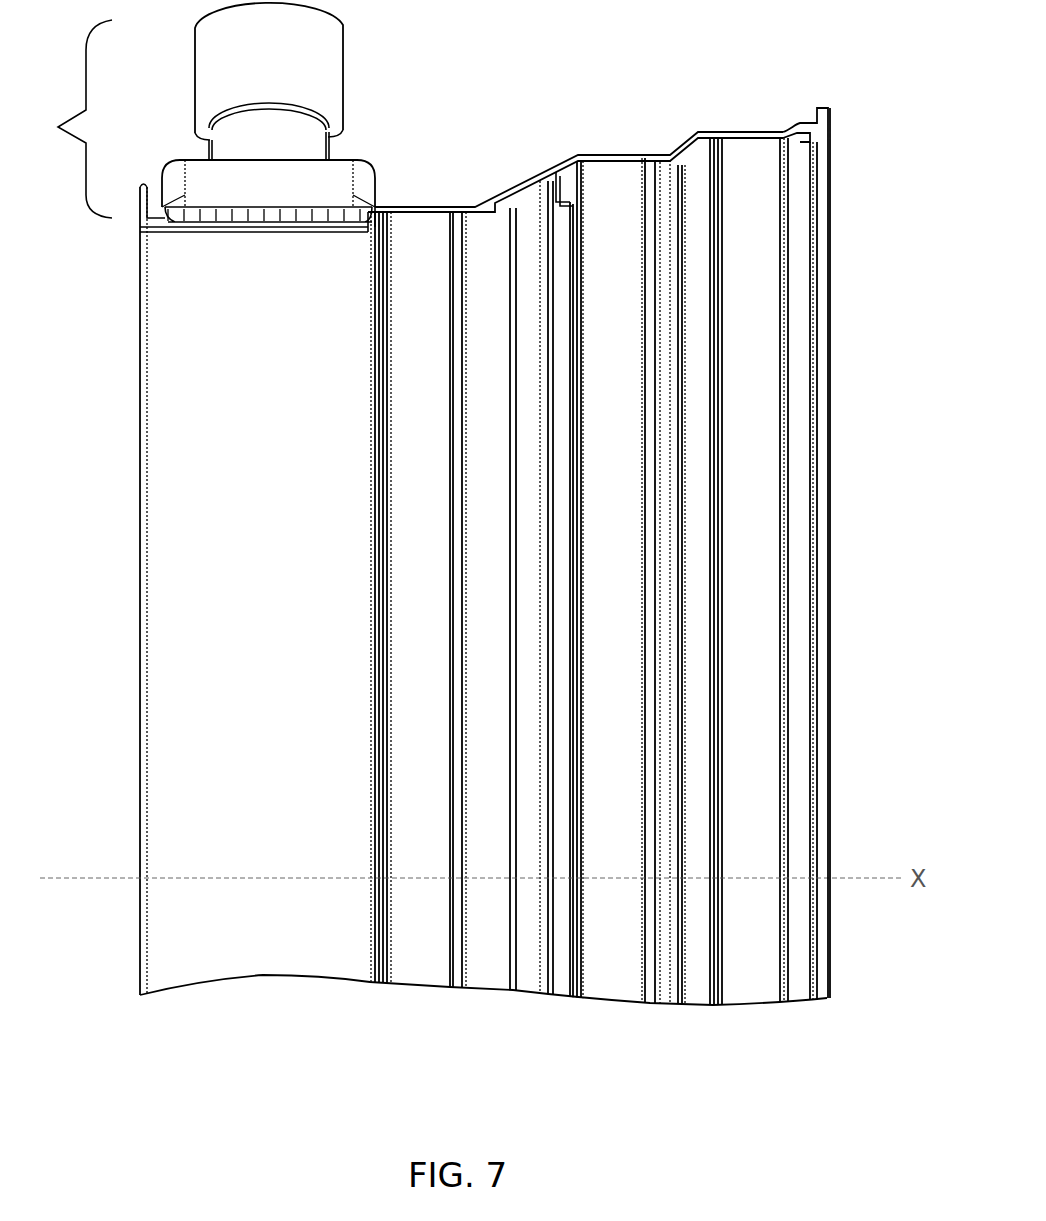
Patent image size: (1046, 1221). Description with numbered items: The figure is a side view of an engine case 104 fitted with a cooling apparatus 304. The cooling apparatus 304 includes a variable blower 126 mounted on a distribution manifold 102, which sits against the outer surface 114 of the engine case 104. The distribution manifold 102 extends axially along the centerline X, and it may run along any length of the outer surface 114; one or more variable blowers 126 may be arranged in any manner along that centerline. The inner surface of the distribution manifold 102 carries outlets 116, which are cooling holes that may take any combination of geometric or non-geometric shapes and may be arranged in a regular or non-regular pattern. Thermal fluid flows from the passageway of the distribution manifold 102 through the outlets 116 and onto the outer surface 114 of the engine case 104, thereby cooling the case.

The distribution manifold 102 is at (373, 180).
The engine case 104 is at (832, 124).
The outer surface 114 is at (616, 153).
The outlets 116 is at (208, 226).
The variable blower 126 is at (193, 31).
The cooling apparatus 304 is at (58, 119).